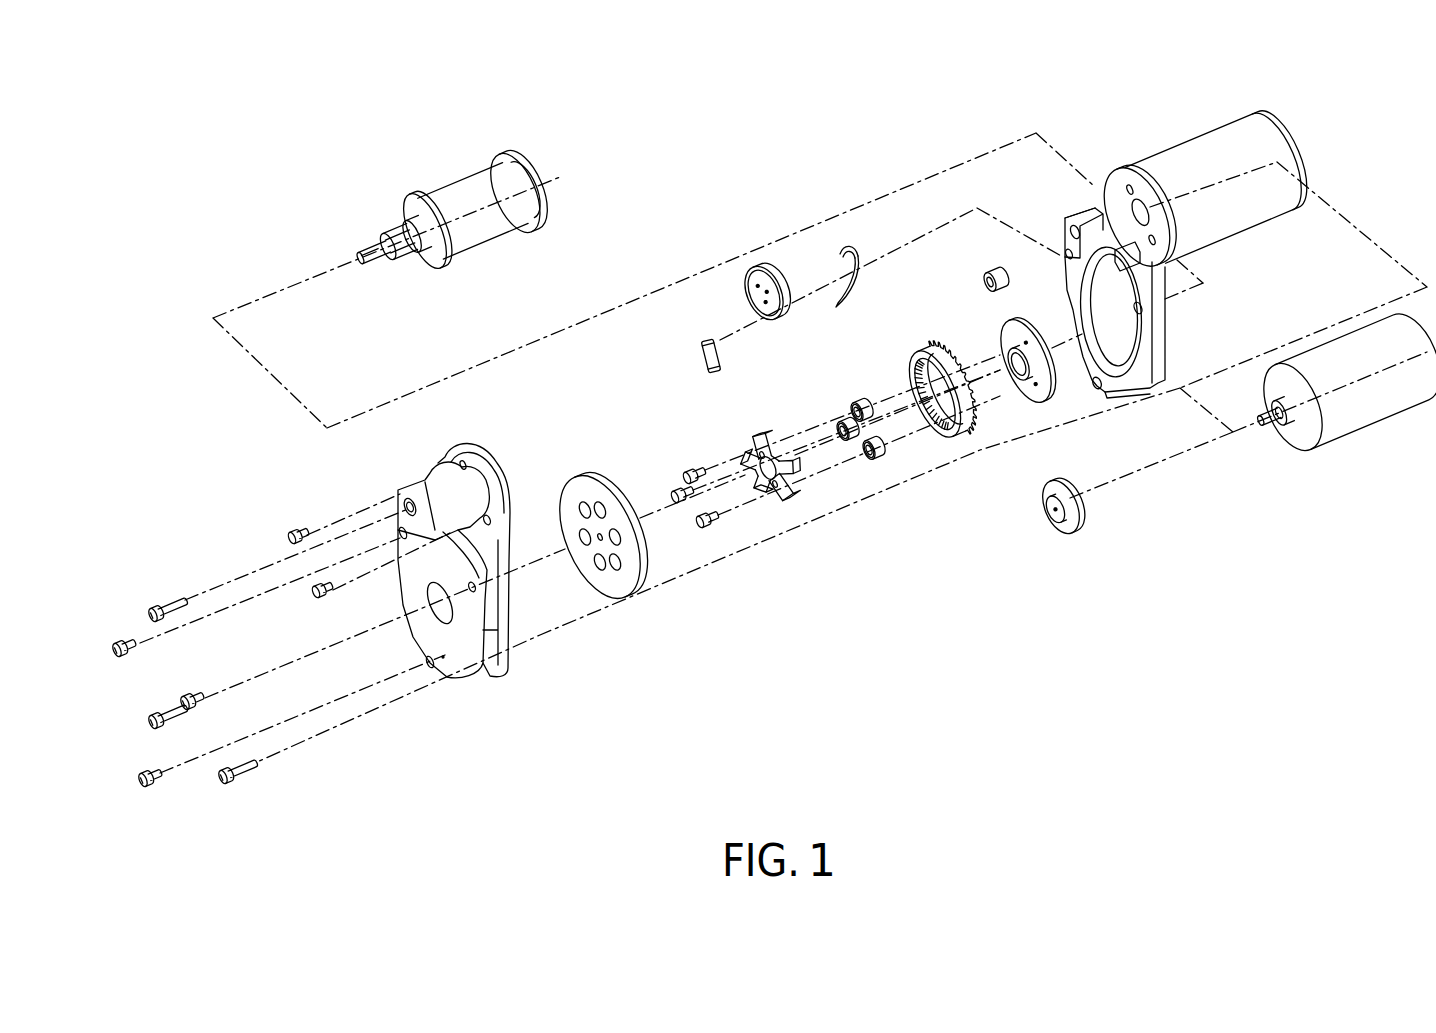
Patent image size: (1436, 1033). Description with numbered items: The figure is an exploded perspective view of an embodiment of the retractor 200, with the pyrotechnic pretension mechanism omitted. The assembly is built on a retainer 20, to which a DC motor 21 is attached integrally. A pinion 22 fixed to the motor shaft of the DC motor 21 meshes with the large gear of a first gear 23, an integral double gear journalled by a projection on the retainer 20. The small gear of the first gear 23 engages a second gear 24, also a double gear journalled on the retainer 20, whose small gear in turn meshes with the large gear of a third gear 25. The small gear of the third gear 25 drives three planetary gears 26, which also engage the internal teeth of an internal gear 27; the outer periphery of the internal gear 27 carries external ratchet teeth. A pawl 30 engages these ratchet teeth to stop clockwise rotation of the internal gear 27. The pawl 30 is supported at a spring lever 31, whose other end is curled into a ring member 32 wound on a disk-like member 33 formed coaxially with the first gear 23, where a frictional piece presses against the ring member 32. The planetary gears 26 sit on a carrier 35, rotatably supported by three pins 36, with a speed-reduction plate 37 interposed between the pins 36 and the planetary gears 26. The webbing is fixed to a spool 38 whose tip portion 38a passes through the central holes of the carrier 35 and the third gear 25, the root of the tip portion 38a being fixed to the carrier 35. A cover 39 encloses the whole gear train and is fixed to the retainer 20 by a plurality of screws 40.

The retractor 200 is at (973, 721).
The retainer 20 is at (1142, 398).
The DC motor 21 is at (1352, 437).
The pinion 22 is at (986, 296).
The first gear 23 is at (758, 262).
The second gear 24 is at (1074, 535).
The third gear 25 is at (591, 470).
The planetary gears 26 is at (876, 458).
The internal gear 27 is at (962, 440).
The pawl 30 is at (700, 357).
The lever 31 is at (866, 286).
The ring member 32 is at (848, 247).
The disk-like member 33 is at (754, 291).
The carrier 35 is at (1044, 400).
The pins 36 is at (686, 468).
The speed-reduction plate 37 is at (782, 502).
The spool 38 is at (453, 180).
The tip portion 38a is at (370, 245).
The cover 39 is at (472, 682).
The screws 40 is at (166, 602).